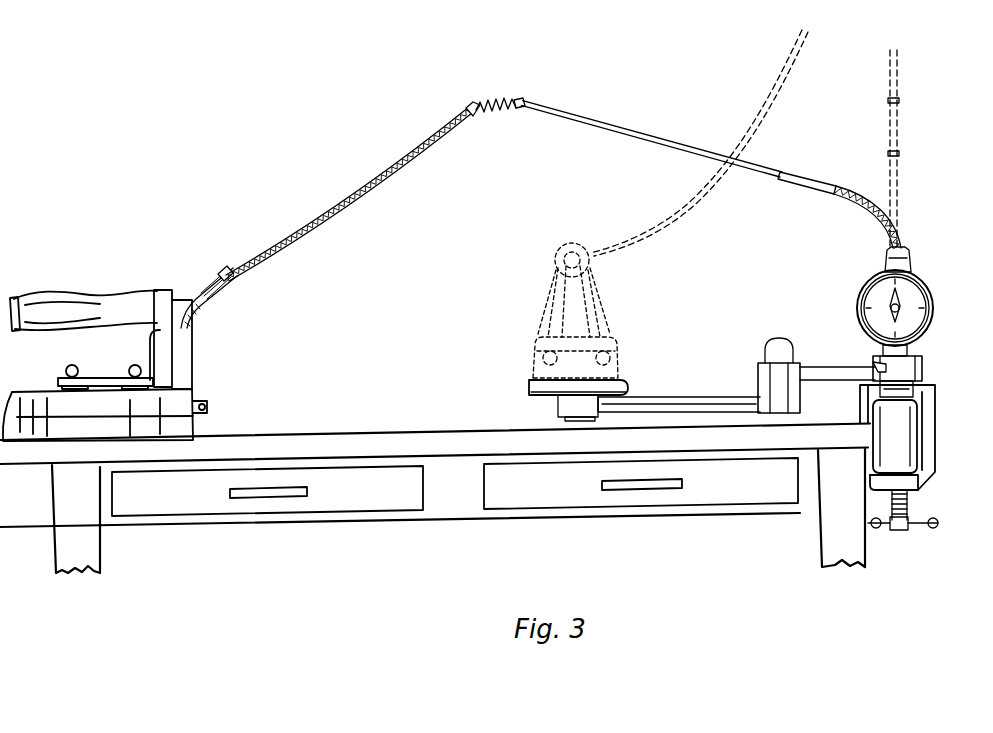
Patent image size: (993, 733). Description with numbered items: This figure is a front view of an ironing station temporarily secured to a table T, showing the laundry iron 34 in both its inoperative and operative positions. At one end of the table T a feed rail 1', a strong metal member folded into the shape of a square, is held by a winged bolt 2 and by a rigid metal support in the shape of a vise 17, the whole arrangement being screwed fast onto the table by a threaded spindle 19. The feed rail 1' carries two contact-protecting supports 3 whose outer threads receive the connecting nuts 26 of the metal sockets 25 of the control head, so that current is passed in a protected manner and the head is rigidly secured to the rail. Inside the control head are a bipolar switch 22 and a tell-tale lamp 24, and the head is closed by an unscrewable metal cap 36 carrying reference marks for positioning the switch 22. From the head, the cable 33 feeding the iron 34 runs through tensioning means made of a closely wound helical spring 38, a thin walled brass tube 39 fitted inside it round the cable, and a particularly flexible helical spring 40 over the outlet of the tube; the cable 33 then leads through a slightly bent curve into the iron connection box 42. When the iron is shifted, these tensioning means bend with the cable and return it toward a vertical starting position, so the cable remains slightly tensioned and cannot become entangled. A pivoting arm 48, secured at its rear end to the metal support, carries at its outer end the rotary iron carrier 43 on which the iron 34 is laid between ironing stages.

The table T is at (458, 437).
The laundry iron 34 is at (160, 432).
The iron connection box 42 is at (188, 318).
The cable 33 is at (426, 158).
The helical spring 40 is at (527, 100).
The thin walled brass tube 39 is at (628, 123).
The helical spring 38 is at (846, 183).
The tell-tale lamp 24 is at (907, 257).
The metal cap 36 is at (888, 298).
The bipolar switch 22 is at (906, 303).
The connecting nut 26 is at (876, 366).
The metal socket 25 is at (922, 362).
The contact-protecting support 3 is at (914, 391).
The vise 17 is at (925, 419).
The feed rail 1' is at (925, 436).
The winged bolt 2 is at (906, 502).
The threaded spindle 19 is at (910, 532).
The iron carrier 43 is at (532, 388).
The pivoting arm 48 is at (712, 402).